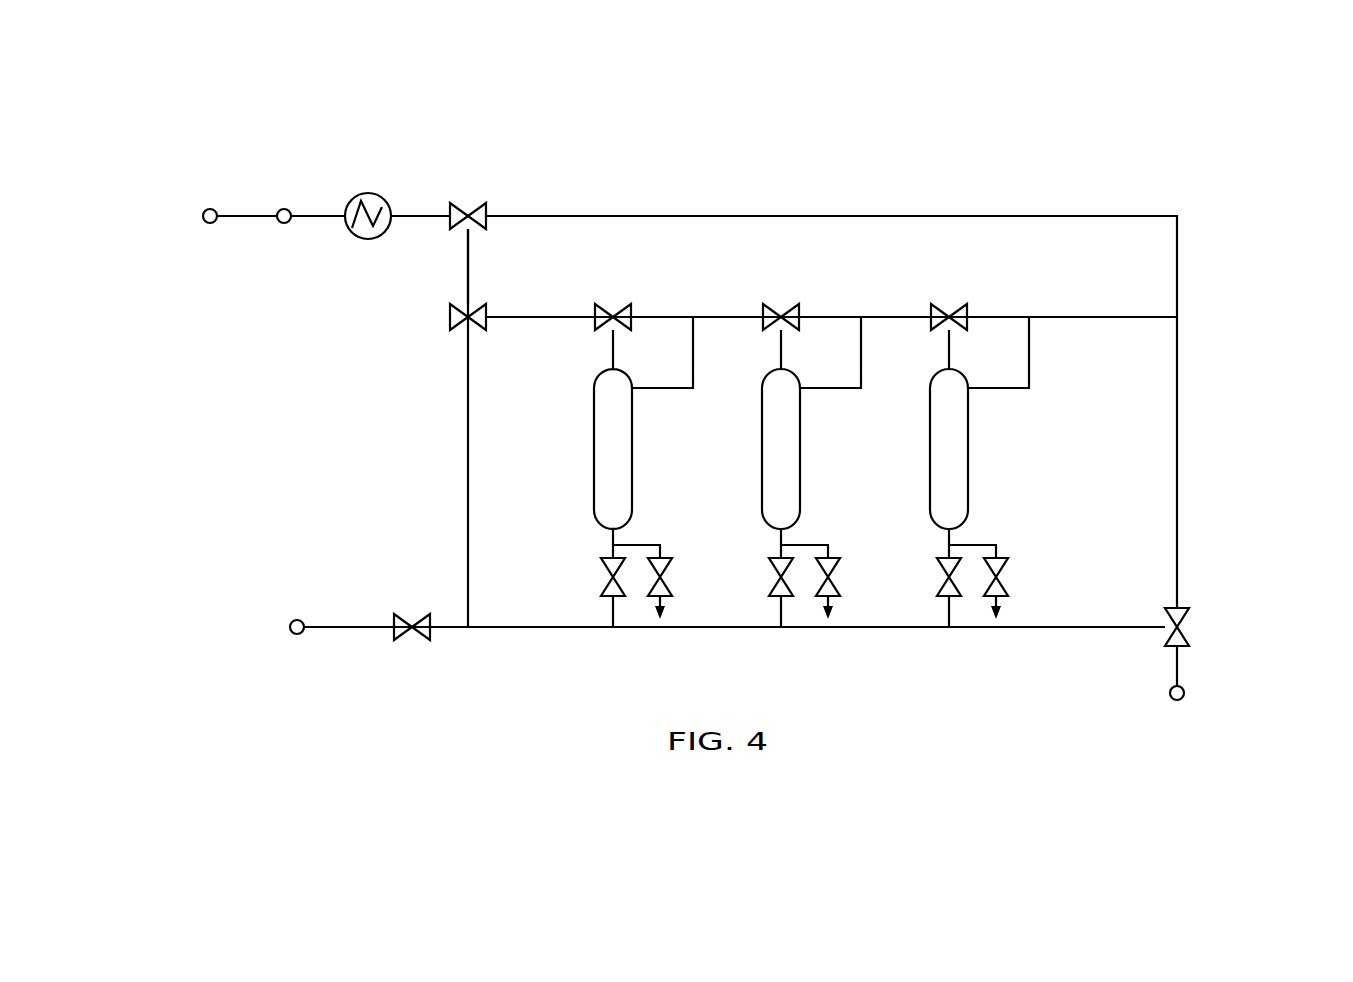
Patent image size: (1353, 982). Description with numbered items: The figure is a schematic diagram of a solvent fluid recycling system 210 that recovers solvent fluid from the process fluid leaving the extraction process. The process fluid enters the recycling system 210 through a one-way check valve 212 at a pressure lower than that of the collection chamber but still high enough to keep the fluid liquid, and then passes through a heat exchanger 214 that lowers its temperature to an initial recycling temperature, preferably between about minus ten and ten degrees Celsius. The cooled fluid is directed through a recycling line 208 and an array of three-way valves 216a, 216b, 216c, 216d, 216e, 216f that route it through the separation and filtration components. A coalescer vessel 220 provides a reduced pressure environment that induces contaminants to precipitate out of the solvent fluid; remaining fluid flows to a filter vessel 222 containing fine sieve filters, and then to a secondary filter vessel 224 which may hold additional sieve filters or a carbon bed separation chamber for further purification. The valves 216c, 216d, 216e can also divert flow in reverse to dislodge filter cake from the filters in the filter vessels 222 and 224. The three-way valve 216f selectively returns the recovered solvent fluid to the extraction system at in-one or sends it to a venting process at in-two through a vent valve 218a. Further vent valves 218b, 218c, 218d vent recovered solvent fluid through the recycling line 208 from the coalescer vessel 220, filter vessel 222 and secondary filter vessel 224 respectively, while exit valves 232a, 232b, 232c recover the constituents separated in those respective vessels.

The recycling system 210 is at (213, 73).
The recycling line 208 is at (467, 265).
The check valve 212 is at (284, 209).
The heat exchanger 214 is at (368, 193).
The three-way valve 216a is at (468, 204).
The three-way valve 216b is at (468, 305).
The three-way valve 216c is at (613, 305).
The three-way valve 216d is at (781, 305).
The three-way valve 216e is at (949, 305).
The three-way valve 216f is at (1187, 623).
The vent valve 218a is at (412, 615).
The vent valve 218b is at (602, 572).
The vent valve 218c is at (769, 567).
The vent valve 218d is at (939, 567).
The coalescer vessel 220 is at (593, 447).
The filter vessel 222 is at (761, 447).
The secondary filter vessel 224 is at (929, 447).
The exit valve 232a is at (668, 567).
The exit valve 232b is at (836, 567).
The exit valve 232c is at (1004, 567).